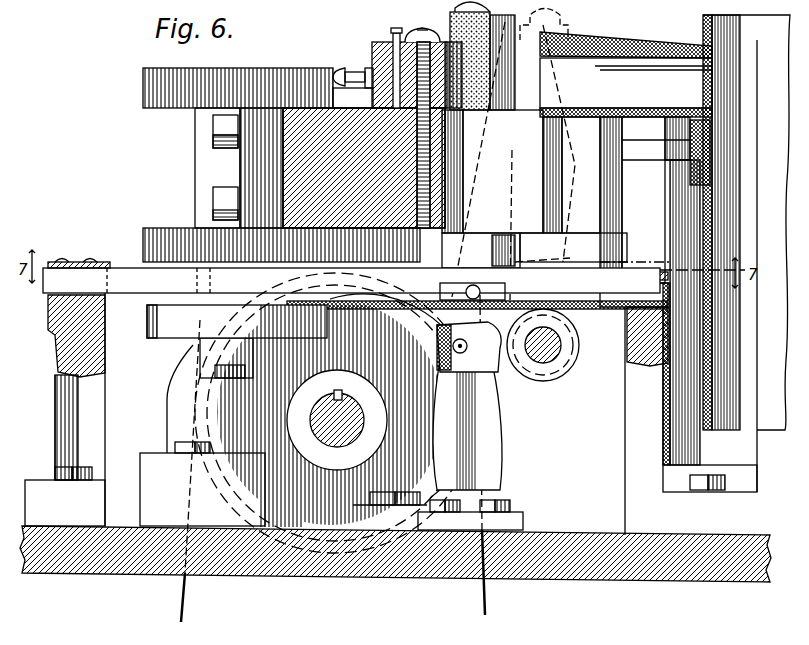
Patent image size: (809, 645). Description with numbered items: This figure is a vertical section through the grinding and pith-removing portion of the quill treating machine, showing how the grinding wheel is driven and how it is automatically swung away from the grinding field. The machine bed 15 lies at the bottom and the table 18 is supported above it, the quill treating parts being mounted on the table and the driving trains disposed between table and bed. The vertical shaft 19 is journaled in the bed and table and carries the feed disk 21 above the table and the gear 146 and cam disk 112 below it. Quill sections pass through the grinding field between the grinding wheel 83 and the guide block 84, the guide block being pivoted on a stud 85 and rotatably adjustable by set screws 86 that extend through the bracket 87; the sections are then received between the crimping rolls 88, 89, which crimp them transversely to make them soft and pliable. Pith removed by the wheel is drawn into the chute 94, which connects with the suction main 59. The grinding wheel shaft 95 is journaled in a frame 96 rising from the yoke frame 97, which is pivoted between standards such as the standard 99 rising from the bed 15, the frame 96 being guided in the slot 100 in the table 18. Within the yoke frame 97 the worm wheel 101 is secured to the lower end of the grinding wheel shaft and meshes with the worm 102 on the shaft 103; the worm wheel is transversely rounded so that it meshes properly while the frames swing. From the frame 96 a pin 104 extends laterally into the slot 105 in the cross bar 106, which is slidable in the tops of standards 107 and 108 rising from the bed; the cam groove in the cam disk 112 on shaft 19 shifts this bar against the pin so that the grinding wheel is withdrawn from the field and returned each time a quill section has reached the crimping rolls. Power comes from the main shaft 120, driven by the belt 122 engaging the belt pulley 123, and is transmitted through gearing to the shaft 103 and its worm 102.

The machine bed 15 is at (668, 582).
The table 18 is at (328, 112).
The vertical shaft 19 is at (187, 296).
The feed disk 21 is at (227, 79).
The suction main 59 is at (708, 213).
The grinding wheel 83 is at (520, 80).
The guide block 84 is at (448, 48).
The stud 85 is at (422, 121).
The set screws 86 is at (350, 65).
The bracket 87 is at (378, 50).
The crimping roll 88 is at (520, 52).
The crimping roll 89 is at (395, 42).
The chute 94 is at (625, 45).
The grinding wheel shaft 95 is at (366, 125).
The frame 96 is at (532, 184).
The yoke frame 97 is at (573, 267).
The standard 99 is at (490, 438).
The slot 100 is at (615, 172).
The worm wheel 101 is at (440, 354).
The worm 102 is at (572, 353).
The shaft 103 is at (557, 342).
The pin 104 is at (460, 287).
The slot 105 is at (465, 295).
The cross bar 106 is at (338, 410).
The standard 107 is at (80, 330).
The standard 108 is at (657, 400).
The cam disk 112 is at (165, 333).
The main shaft 120 is at (333, 447).
The belt 122 is at (186, 611).
The belt pulley 123 is at (246, 504).
The gear 146 is at (168, 232).